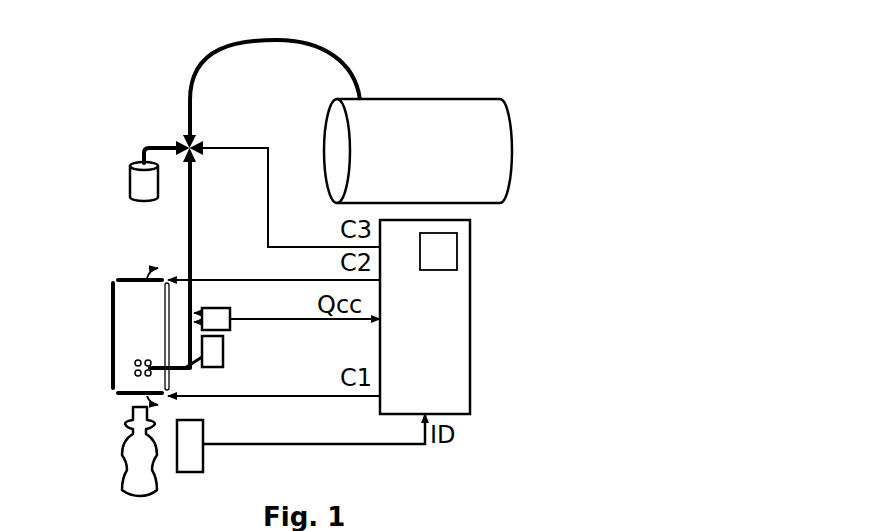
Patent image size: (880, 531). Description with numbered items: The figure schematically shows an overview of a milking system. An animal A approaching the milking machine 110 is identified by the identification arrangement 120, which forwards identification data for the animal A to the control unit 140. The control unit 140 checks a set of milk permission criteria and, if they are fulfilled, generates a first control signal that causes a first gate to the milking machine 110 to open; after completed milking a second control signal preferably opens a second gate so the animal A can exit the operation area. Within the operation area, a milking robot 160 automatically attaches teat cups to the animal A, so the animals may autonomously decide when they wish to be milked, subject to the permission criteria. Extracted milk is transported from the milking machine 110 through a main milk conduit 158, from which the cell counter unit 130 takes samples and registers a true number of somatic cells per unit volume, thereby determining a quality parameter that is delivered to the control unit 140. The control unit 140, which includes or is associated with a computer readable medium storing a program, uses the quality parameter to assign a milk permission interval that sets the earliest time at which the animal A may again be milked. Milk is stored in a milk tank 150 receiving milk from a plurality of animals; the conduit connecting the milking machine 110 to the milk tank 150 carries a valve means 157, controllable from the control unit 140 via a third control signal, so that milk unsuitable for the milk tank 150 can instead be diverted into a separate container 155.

The milking machine 110 is at (130, 338).
The identification arrangement 120 is at (203, 460).
The cell counter unit 130 is at (232, 328).
The control unit 140 is at (470, 317).
The milk tank 150 is at (423, 98).
The separate container 155 is at (128, 175).
The valve means 157 is at (180, 137).
The main milk conduit 158 is at (187, 243).
The milking robot 160 is at (223, 350).
The animal A is at (128, 450).